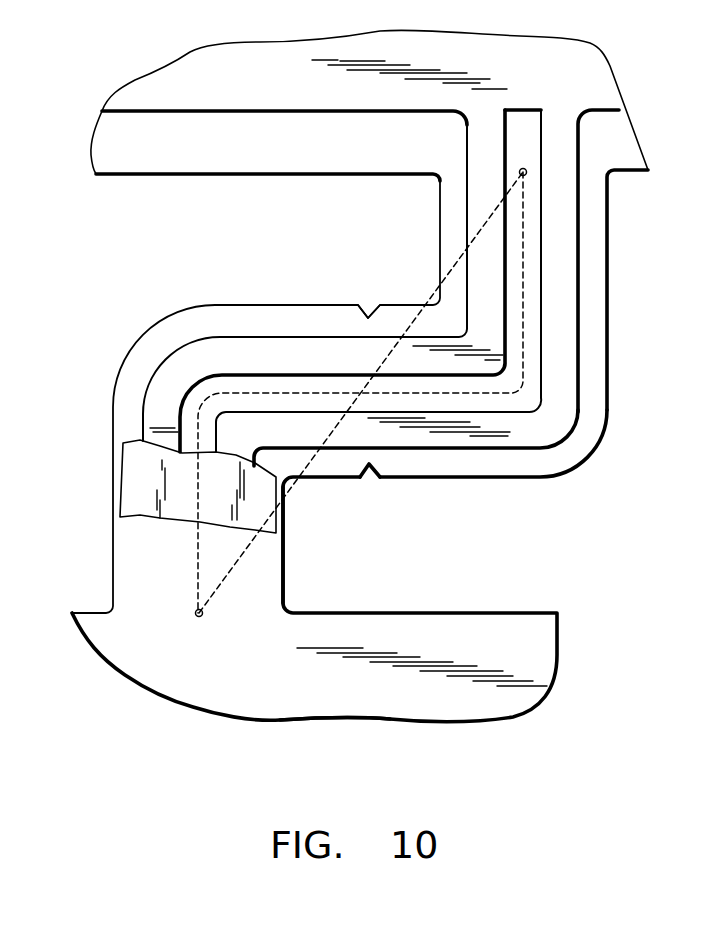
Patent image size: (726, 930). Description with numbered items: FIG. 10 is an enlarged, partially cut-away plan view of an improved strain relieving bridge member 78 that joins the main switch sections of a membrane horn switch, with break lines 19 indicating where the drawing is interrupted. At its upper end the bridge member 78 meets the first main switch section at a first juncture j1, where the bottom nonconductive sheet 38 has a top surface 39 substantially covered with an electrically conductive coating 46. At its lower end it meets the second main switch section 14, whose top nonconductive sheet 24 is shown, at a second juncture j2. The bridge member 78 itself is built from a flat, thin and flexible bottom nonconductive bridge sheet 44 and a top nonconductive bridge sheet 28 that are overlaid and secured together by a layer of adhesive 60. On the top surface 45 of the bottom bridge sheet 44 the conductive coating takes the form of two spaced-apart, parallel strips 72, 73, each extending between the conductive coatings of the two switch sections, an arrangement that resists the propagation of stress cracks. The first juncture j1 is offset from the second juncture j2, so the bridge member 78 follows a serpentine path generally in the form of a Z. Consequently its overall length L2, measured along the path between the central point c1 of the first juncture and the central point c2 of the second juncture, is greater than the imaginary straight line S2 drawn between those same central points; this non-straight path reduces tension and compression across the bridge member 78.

The second main switch section 14 is at (473, 610).
The break line 19 is at (365, 306).
The top nonconductive sheet 24 is at (414, 703).
The top nonconductive bridge sheet 28 is at (127, 544).
The bottom nonconductive sheet 38 is at (193, 175).
The top surface 39 is at (270, 161).
The bottom nonconductive bridge sheet 44 is at (609, 342).
The top surface 45 is at (596, 290).
The electrically conductive coating 46 is at (193, 115).
The layer of adhesive 60 is at (133, 473).
The conductive strip 72 is at (478, 192).
The conductive strip 73 is at (574, 222).
The strain relieving bridge member 78 is at (627, 456).
The central point of the first juncture c1 is at (527, 168).
The central point of the second juncture c2 is at (202, 617).
The first juncture j1 is at (612, 181).
The second juncture j2 is at (110, 604).
The overall length L2 is at (197, 576).
The imaginary straight line S2 is at (237, 563).